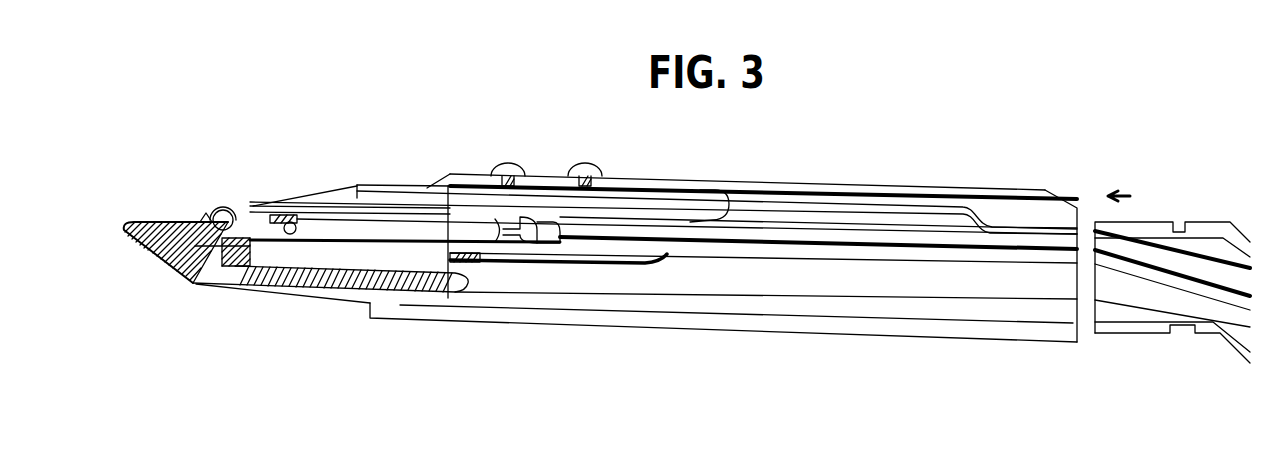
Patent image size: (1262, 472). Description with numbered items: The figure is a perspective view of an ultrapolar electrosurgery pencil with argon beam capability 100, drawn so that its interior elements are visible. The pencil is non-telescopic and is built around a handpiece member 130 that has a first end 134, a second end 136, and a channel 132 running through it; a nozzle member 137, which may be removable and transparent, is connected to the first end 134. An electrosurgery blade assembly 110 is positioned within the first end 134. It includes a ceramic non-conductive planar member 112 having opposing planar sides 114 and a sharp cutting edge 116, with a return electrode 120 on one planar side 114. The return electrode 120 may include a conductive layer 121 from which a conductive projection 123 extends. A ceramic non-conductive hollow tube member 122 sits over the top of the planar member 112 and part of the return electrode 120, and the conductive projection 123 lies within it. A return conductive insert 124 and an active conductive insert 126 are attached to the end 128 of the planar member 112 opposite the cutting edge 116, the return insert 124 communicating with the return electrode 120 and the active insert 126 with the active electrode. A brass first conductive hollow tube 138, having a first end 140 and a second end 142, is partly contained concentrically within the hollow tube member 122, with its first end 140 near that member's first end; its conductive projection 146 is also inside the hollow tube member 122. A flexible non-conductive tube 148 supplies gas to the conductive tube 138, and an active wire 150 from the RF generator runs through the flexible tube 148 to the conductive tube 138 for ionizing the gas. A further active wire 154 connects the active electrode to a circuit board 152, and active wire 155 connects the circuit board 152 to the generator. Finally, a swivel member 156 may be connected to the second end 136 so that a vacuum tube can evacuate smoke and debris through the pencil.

The ultrapolar electrosurgery pencil with argon beam capability 100 is at (838, 113).
The electrosurgery blade assembly 110 is at (208, 216).
The non-conductive planar member 112 is at (163, 221).
The opposing planar sides 114 is at (343, 271).
The sharp cutting edge 116 is at (147, 258).
The return electrode 120 is at (197, 284).
The conductive layer 121 is at (233, 285).
The non-conductive hollow tube member 122 is at (240, 210).
The conductive projection 123 is at (253, 208).
The return conductive insert 124 is at (450, 245).
The active conductive insert 126 is at (480, 260).
The end of non-conductive planar member 128 is at (478, 258).
The handpiece member 130 is at (618, 323).
The channel 132 is at (753, 277).
The first end of handpiece member 134 is at (358, 314).
The second end of handpiece member 136 is at (1079, 331).
The nozzle member 137 is at (360, 190).
The first conductive hollow tube 138 is at (337, 222).
The first end of first conductive hollow tube 140 is at (283, 296).
The second end of first conductive hollow tube 142 is at (573, 248).
The conductive projection 146 is at (277, 207).
The flexible non-conductive tube 148 is at (962, 268).
The active wire 150 is at (885, 248).
The circuit board 152 is at (665, 240).
The active wire 154 is at (633, 258).
The active wire 155 is at (905, 194).
The swivel member 156 is at (1130, 327).